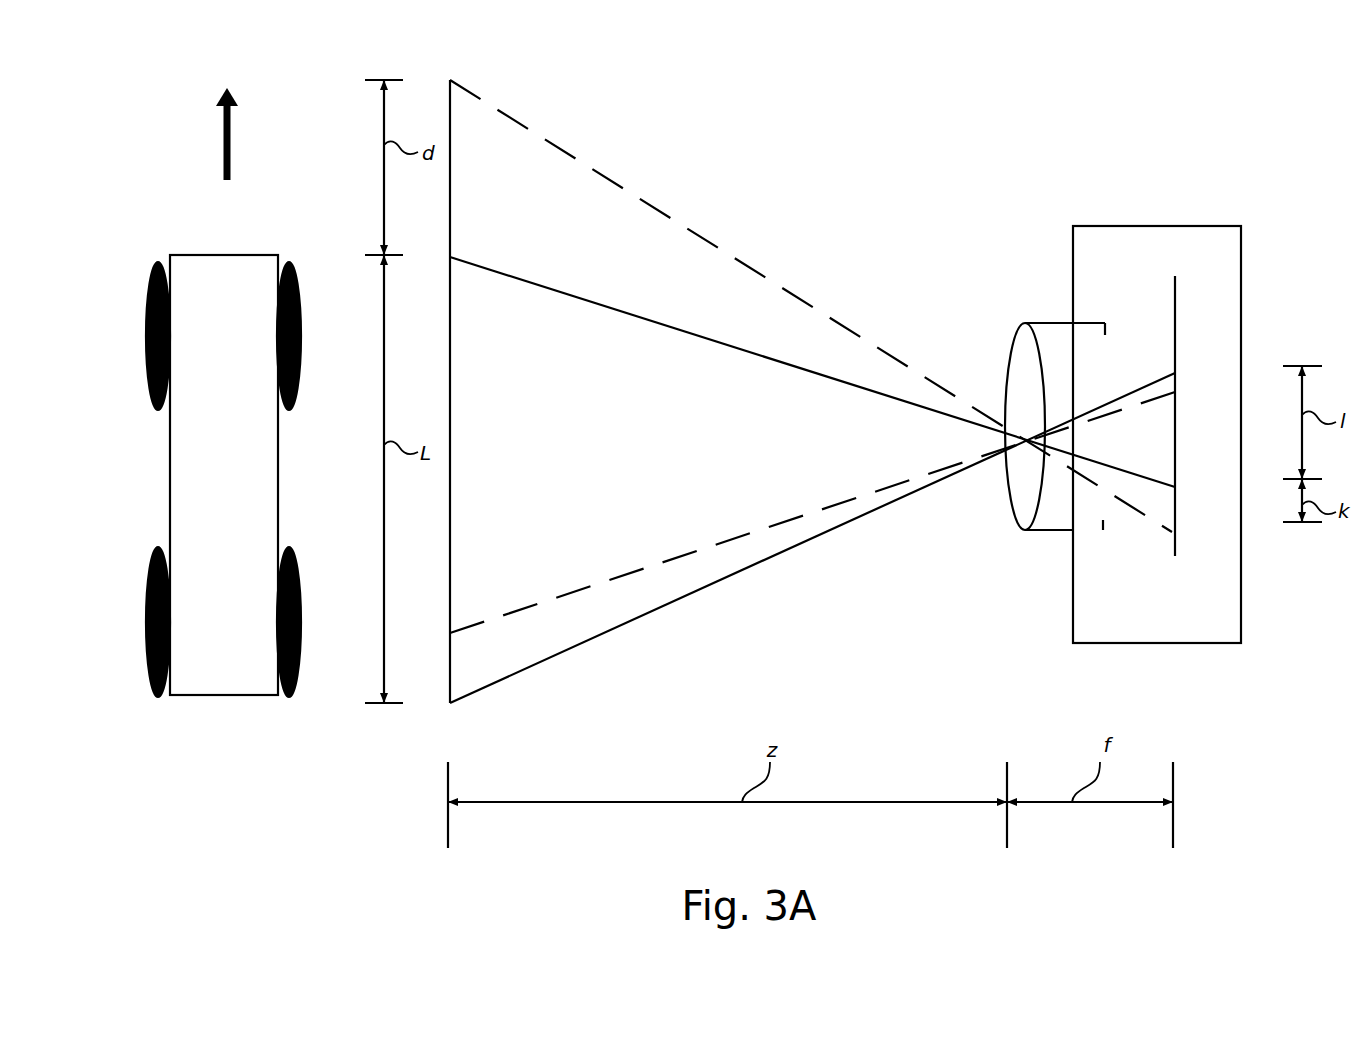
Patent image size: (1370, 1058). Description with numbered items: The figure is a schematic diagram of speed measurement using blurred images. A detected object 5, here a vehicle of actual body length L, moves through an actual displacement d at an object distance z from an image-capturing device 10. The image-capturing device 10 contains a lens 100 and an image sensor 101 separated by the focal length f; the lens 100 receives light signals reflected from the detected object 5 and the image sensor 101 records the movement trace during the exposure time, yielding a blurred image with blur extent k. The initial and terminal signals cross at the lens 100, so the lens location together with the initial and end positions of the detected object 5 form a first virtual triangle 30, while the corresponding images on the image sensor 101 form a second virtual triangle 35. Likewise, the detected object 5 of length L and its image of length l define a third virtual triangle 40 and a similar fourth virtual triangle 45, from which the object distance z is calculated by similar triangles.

The detected object 5 is at (240, 255).
The image-capturing device 10 is at (1133, 208).
The first virtual triangle 30 is at (658, 267).
The third virtual triangle 40 is at (737, 412).
The lens 100 is at (1025, 323).
The image sensor 101 is at (1176, 340).
The fourth virtual triangle 45 is at (1145, 427).
The second virtual triangle 35 is at (1158, 497).